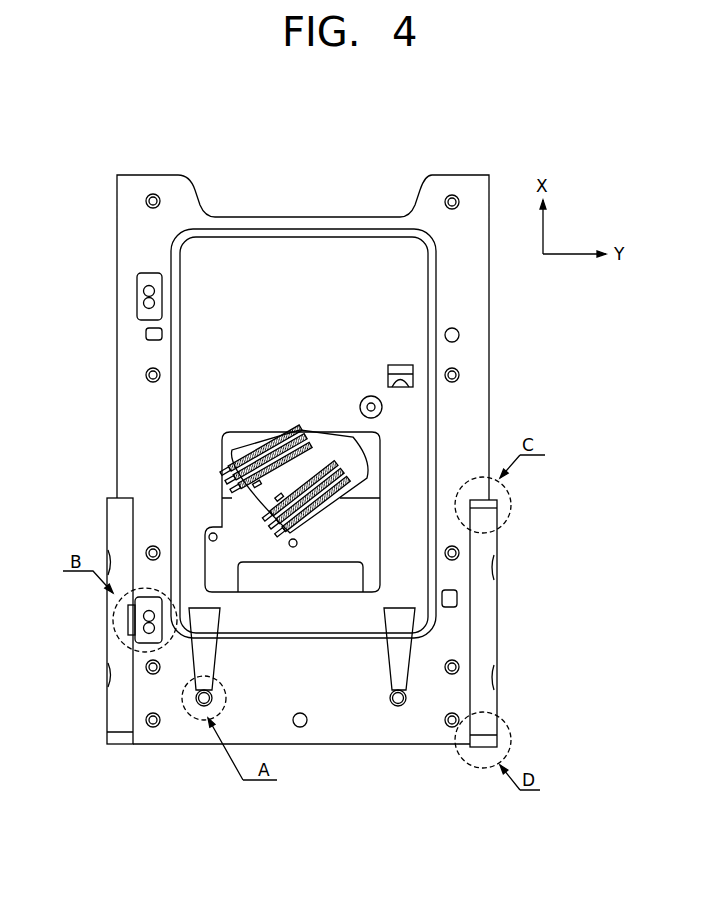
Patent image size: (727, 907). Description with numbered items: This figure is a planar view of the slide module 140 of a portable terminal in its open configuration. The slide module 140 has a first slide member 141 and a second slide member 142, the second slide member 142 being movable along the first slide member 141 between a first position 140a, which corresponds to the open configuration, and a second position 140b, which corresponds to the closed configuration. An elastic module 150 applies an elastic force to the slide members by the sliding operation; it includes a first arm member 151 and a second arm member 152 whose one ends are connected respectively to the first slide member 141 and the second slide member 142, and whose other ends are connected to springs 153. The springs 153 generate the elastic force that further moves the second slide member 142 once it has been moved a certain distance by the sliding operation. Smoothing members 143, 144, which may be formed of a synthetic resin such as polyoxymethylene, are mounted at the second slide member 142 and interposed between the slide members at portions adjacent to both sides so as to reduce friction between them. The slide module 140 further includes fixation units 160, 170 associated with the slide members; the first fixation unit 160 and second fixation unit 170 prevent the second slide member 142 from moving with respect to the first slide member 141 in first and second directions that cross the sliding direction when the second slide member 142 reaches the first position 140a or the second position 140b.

The slide module 140 is at (96, 170).
The first position 140a is at (296, 626).
The second position 140b is at (296, 301).
The first slide member 141 is at (128, 357).
The second slide member 142 is at (497, 620).
The smoothing member 143 is at (107, 503).
The smoothing member 144 is at (495, 505).
The elastic module 150 is at (200, 497).
The first arm member 151 is at (335, 437).
The second arm member 152 is at (215, 507).
The springs 153 is at (232, 455).
The first fixation unit 160 is at (200, 710).
The second fixation unit 170 is at (130, 620).